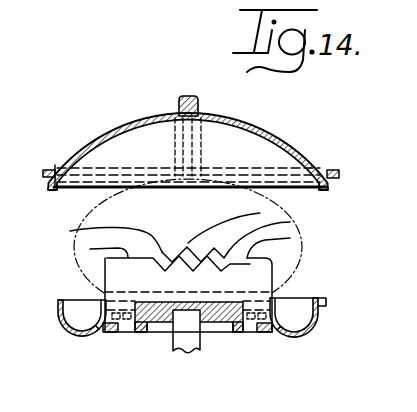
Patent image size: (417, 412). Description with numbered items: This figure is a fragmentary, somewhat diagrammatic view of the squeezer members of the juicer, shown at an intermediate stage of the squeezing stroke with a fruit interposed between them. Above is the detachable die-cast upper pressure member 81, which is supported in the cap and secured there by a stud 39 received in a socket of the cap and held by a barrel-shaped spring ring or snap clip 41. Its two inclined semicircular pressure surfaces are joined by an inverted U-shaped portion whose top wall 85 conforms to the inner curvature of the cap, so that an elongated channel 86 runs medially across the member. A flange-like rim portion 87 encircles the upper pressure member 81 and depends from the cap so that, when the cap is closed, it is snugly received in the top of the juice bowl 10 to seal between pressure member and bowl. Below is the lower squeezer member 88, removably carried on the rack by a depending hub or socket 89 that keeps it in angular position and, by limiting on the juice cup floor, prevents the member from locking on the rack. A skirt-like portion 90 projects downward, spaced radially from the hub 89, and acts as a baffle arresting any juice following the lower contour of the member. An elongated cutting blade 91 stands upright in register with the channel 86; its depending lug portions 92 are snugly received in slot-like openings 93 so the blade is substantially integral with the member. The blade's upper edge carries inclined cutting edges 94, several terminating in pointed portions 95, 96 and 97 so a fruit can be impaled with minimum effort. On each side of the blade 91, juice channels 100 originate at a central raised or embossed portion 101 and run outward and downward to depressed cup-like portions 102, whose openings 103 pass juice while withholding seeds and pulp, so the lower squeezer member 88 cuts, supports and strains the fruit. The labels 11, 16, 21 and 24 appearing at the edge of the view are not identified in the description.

The juice bowl 10 is at (22, 236).
The container wall 11 is at (11, 248).
The container neck 16 is at (9, 275).
The bead 21 is at (12, 203).
The tube 24 is at (0, 148).
The stud 39 is at (192, 97).
The spring ring or snap clip 41 is at (178, 106).
The upper pressure member 81 is at (236, 118).
The top wall 85 is at (121, 131).
The elongated channel 86 is at (256, 147).
The flange-like rim portion 87 is at (58, 187).
The lower squeezer member 88 is at (253, 336).
The depending hub or socket 89 is at (218, 323).
The skirt-like portion 90 is at (150, 325).
The cutting blade 91 is at (275, 278).
The depending lug portions 92 is at (118, 322).
The slot-like openings 93 is at (132, 333).
The cutting edges 94 is at (90, 249).
The pointed portion 95 is at (290, 222).
The pointed portion 96 is at (260, 213).
The pointed portion 97 is at (70, 231).
The juice channels 100 is at (100, 300).
The raised or embossed portion 101 is at (187, 353).
The depressed cup-like portions 102 is at (58, 322).
The openings 103 is at (88, 338).